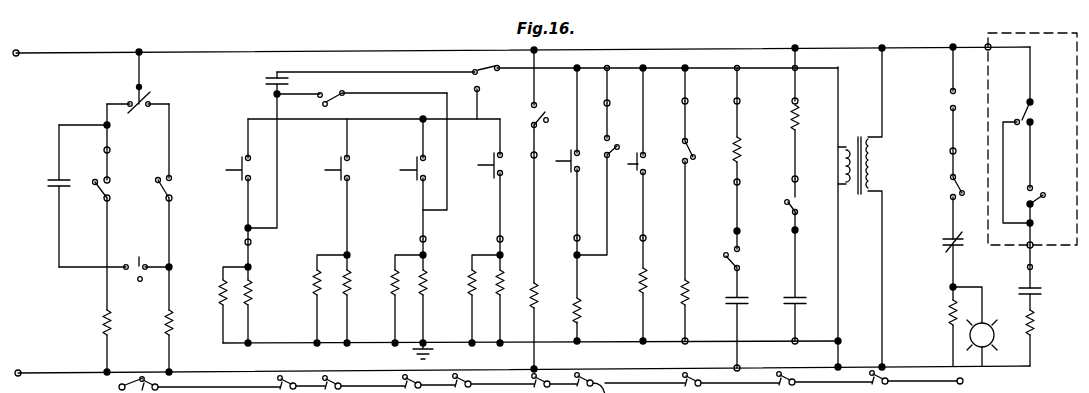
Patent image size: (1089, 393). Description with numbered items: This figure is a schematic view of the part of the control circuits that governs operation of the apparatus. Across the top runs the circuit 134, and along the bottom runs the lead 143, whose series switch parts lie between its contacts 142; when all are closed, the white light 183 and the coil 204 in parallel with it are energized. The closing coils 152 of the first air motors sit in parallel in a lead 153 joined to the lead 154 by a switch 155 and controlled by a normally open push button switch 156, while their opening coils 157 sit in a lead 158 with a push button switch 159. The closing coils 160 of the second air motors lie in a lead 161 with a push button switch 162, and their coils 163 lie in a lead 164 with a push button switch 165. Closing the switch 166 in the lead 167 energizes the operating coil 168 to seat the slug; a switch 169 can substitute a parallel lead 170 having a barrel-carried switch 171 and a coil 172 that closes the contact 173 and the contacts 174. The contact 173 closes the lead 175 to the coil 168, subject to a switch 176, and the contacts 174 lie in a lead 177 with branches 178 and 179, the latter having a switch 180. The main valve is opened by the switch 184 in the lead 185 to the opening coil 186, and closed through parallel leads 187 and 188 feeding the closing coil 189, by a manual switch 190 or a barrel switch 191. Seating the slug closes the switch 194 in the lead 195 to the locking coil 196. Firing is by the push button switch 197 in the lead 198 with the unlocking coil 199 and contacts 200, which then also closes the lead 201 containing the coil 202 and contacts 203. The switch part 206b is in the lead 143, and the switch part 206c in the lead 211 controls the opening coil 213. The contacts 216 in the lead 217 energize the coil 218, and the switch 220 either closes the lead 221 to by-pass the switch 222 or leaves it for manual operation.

The circuit 134 is at (50, 64).
The lead 143 is at (118, 388).
The closing coils 152 is at (253, 309).
The lead 153 is at (417, 120).
The lead 154 is at (752, 63).
The switch 155 is at (479, 85).
The push button switch 156 is at (234, 168).
The opening coils 157 is at (318, 282).
The lead 158 is at (347, 208).
The push button switch 159 is at (334, 172).
The closing coils 160 is at (408, 282).
The lead 161 is at (421, 140).
The push button switch 162 is at (413, 177).
The closing coils 163 is at (488, 290).
The lead 164 is at (484, 207).
The push button switch 165 is at (493, 160).
The switch 166 is at (151, 164).
The lead 167 is at (171, 282).
The operating coil 168 is at (163, 320).
The switch 169 is at (145, 101).
The parallel lead 170 is at (107, 221).
The switch 171 is at (88, 180).
The coil 172 is at (100, 322).
The contact 173 is at (46, 187).
The contacts 174 is at (263, 88).
The lead 175 is at (54, 256).
The switch 176 is at (145, 259).
The lead 177 is at (376, 72).
The branch 178 is at (278, 214).
The branch 179 is at (448, 185).
The switch 180 is at (333, 97).
The white light 183 is at (988, 324).
The switch 184 is at (642, 157).
The lead 185 is at (643, 114).
The opening coil 186 is at (640, 280).
The lead 187 is at (572, 113).
The lead 188 is at (607, 90).
The closing coil 189 is at (582, 307).
The switch 190 is at (562, 186).
The switch 191 is at (624, 154).
The switch 194 is at (690, 148).
The lead 195 is at (680, 228).
The locking coil 196 is at (680, 280).
The push button switch 197 is at (792, 210).
The lead 198 is at (720, 217).
The unlocking coil 199 is at (740, 154).
The contacts 200 is at (760, 300).
The lead 201 is at (795, 79).
The coil 202 is at (789, 132).
The contacts 203 is at (801, 298).
The coil 204 is at (943, 317).
The switch part 206b is at (948, 198).
The switch part 206c is at (532, 107).
The lead 211 is at (551, 166).
The opening coil 213 is at (537, 290).
The contacts 216 is at (1048, 282).
The lead 217 is at (1032, 86).
The coil 218 is at (1034, 322).
The switch 220 is at (1032, 119).
The lead 221 is at (1003, 162).
The switch 222 is at (1034, 224).
The contacts 142 is at (945, 102).